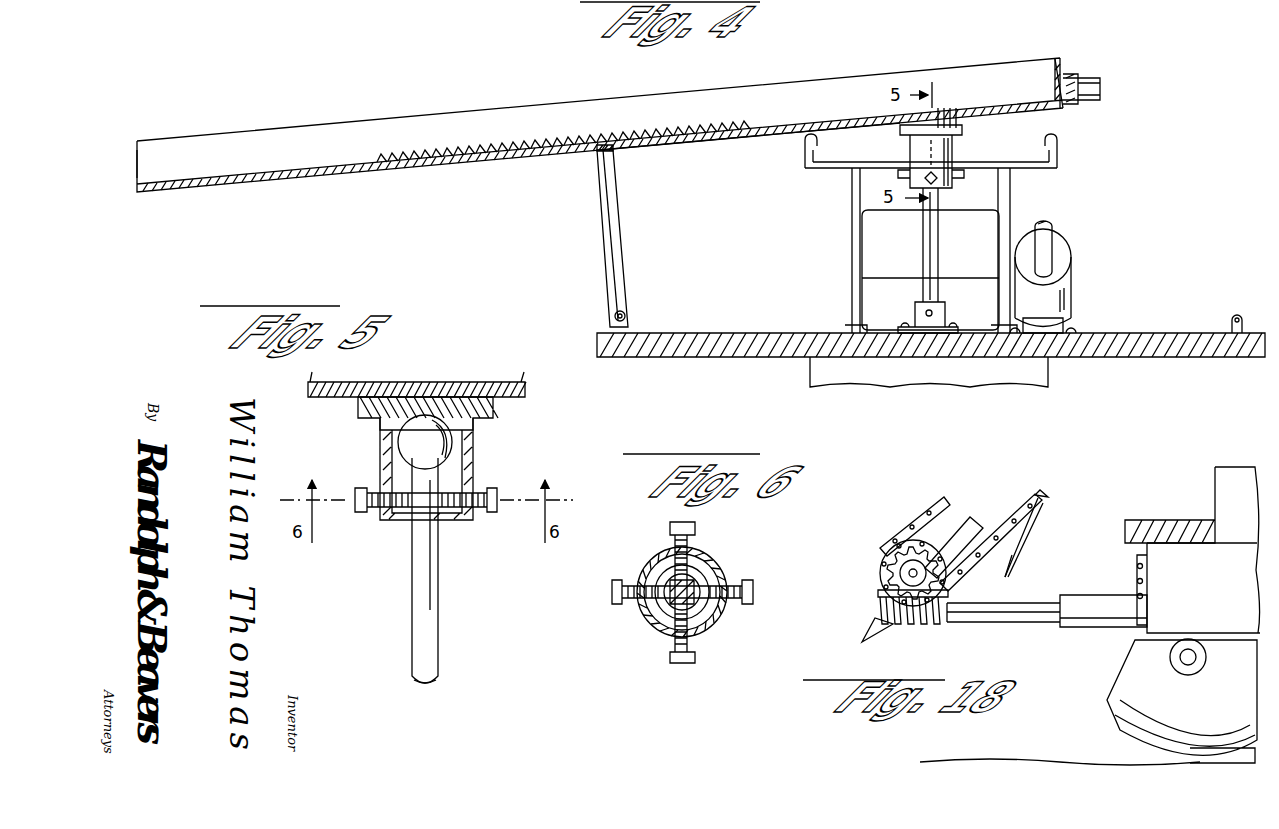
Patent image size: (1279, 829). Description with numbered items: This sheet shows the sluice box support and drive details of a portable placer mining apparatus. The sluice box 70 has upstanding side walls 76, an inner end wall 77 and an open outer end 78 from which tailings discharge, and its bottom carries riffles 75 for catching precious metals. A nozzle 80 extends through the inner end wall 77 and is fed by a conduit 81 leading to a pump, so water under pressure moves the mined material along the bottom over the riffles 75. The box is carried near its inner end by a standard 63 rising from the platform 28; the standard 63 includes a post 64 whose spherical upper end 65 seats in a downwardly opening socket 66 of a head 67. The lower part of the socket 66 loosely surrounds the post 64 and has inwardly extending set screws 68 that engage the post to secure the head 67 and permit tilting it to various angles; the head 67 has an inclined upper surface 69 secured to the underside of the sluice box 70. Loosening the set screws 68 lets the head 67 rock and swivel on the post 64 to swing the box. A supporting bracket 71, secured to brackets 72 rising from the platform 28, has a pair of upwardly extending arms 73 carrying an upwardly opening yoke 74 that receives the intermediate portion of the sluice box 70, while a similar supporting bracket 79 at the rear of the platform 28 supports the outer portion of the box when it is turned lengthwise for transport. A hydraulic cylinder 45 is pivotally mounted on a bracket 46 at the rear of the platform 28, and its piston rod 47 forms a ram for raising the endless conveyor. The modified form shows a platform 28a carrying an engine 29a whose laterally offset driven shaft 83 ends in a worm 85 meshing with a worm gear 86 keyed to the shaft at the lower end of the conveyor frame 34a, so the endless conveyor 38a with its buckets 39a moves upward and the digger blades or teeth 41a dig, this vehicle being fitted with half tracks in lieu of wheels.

In FIG. 4, the sluice box 70 is at (808, 80).
In FIG. 4, the open outer end 78 is at (135, 157).
In FIG. 4, the side walls 76 is at (740, 100).
In FIG. 4, the riffles 75 is at (660, 132).
In FIG. 4, the inner end wall 77 is at (1058, 62).
In FIG. 4, the conduit 81 is at (1100, 82).
In FIG. 4, the nozzle 80 is at (1080, 101).
In FIG. 4, the inclined upper surface 69 is at (948, 124).
In FIG. 4, the head 67 is at (955, 150).
In FIG. 5, the head 67 is at (475, 428).
In FIG. 4, the set screws 68 is at (948, 186).
In FIG. 5, the set screws 68 is at (492, 514).
In FIG. 6, the set screws 68 is at (692, 545).
In FIG. 4, the supporting bracket 79 is at (846, 251).
In FIG. 4, the post 64 is at (938, 264).
In FIG. 5, the post 64 is at (412, 598).
In FIG. 6, the post 64 is at (700, 614).
In FIG. 4, the standard 63 is at (920, 266).
In FIG. 5, the standard 63 is at (408, 657).
In FIG. 4, the hydraulic cylinder 45 is at (1072, 285).
In FIG. 4, the piston rod 47 is at (1054, 240).
In FIG. 4, the bracket 46 is at (1066, 324).
In FIG. 4, the platform 28 is at (1235, 322).
In FIG. 4, the supporting bracket 71 is at (600, 251).
In FIG. 4, the brackets 72 is at (626, 323).
In FIG. 4, the arms 73 is at (620, 208).
In FIG. 4, the yoke 74 is at (600, 152).
In FIG. 5, the spherical upper end 65 is at (418, 440).
In FIG. 5, the socket 66 is at (474, 479).
In FIG. 6, the socket 66 is at (652, 612).
In FIG. 18, the platform 28a is at (1150, 520).
In FIG. 18, the engine 29a is at (1183, 653).
In FIG. 18, the driven shaft 83 is at (1037, 626).
In FIG. 18, the worm gear 86 is at (948, 588).
In FIG. 18, the conveyor frame 34a is at (966, 516).
In FIG. 18, the buckets 39a is at (1040, 521).
In FIG. 18, the endless conveyor 38a is at (1040, 496).
In FIG. 18, the digger blades or teeth 41a is at (1010, 574).
In FIG. 18, the worm 85 is at (916, 626).